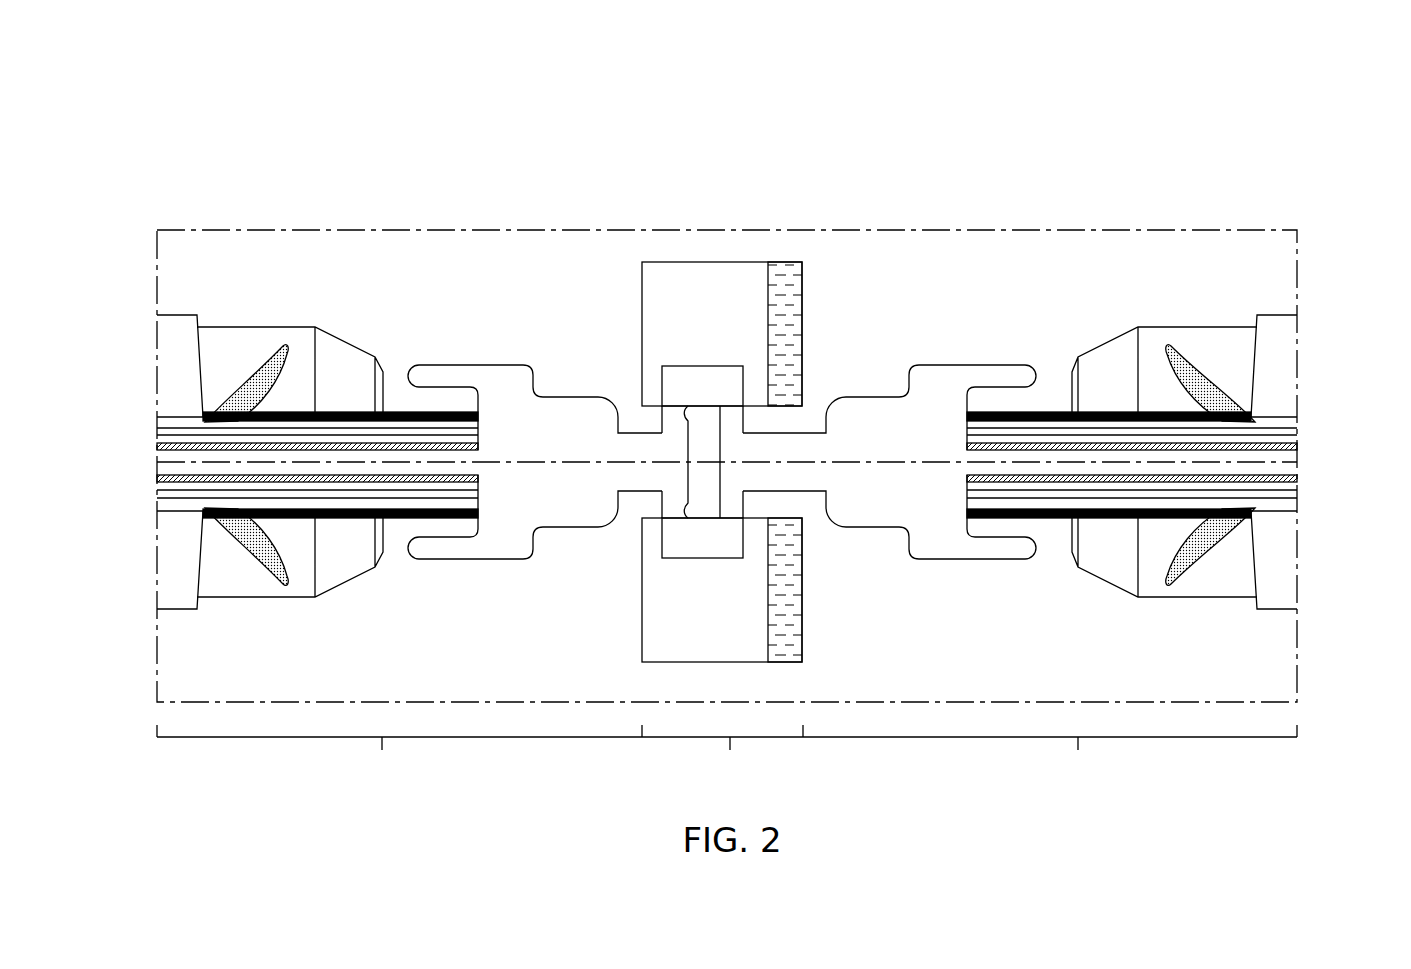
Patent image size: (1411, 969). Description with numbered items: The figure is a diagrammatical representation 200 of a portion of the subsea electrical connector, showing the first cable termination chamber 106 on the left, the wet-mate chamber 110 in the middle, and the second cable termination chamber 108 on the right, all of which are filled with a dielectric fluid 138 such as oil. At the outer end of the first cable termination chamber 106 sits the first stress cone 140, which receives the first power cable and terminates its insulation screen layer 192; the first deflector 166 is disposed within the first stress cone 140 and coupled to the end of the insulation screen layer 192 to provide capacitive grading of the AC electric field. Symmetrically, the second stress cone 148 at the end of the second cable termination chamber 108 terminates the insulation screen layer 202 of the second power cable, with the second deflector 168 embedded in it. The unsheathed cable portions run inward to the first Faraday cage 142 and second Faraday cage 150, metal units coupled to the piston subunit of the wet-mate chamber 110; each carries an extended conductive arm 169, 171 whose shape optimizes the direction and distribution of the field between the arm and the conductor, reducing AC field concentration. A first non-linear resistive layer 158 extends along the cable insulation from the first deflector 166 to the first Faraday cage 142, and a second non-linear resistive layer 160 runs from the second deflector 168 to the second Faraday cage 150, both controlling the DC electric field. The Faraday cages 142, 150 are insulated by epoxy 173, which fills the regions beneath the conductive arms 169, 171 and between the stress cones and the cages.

The diagrammatical representation 200 is at (1283, 110).
The first cable termination chamber 106 is at (399, 753).
The wet-mate chamber 110 is at (722, 753).
The second cable termination chamber 108 is at (1050, 753).
The first stress cone 140 is at (240, 327).
The second stress cone 148 is at (1184, 327).
The insulation screen layer 192 is at (183, 422).
The insulation screen layer 202 is at (1274, 423).
The first deflector 166 is at (287, 359).
The second deflector 168 is at (1165, 352).
The extended conductive arm 169 is at (446, 365).
The first Faraday cage 142 is at (577, 392).
The first non-linear resistive layer 158 is at (408, 520).
The extended conductive arm 171 is at (983, 365).
The second Faraday cage 150 is at (863, 390).
The second non-linear resistive layer 160 is at (1032, 522).
The dielectric fluid 138 is at (803, 281).
The epoxy 173 is at (520, 630).